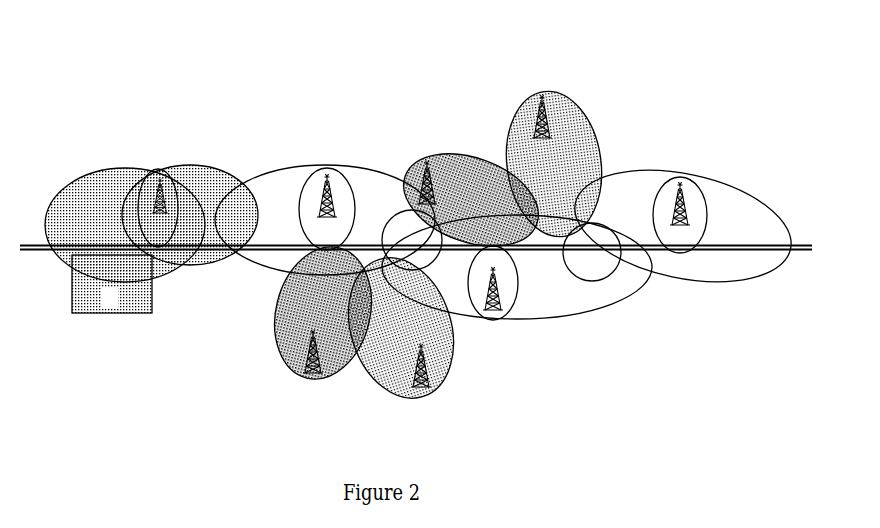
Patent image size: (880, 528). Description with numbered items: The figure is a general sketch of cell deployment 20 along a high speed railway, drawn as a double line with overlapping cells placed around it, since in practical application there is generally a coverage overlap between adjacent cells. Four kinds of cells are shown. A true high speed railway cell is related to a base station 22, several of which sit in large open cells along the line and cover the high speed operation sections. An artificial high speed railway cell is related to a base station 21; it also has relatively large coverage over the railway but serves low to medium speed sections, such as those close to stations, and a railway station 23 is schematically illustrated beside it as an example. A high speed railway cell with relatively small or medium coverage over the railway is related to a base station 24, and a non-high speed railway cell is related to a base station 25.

The wireless communication system 20 is at (689, 55).
The base station of artificial high speed railway cell 21 is at (150, 178).
The base station of true high speed railway cell 22 is at (320, 186).
The railway station 23 is at (92, 318).
The base station of high speed railway cell with small/medium coverage 24 is at (425, 168).
The base station of non-high speed railway cell 25 is at (556, 112).